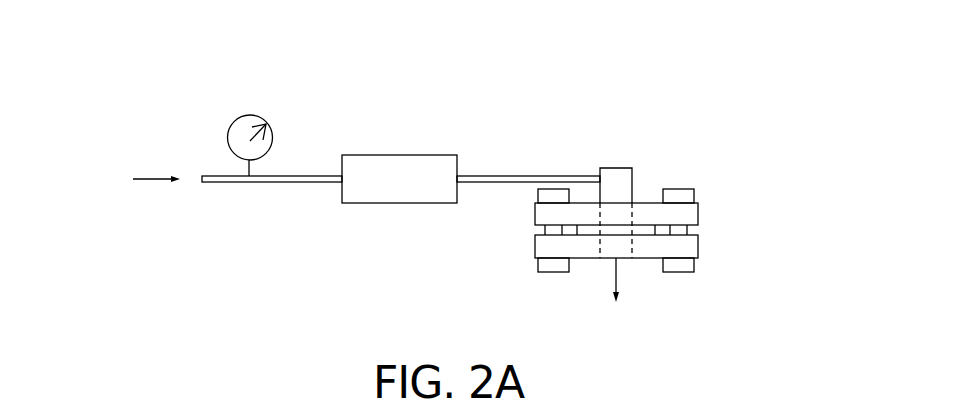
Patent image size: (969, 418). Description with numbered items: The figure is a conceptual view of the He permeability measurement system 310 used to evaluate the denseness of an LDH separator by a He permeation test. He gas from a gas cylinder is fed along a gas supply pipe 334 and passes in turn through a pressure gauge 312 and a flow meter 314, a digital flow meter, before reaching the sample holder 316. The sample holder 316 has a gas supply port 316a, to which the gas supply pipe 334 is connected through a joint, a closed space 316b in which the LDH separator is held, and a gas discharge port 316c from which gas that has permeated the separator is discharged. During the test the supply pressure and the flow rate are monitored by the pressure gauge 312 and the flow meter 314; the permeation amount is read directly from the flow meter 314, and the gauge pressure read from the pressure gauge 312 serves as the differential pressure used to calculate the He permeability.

The He permeability measurement system 310 is at (461, 178).
The pressure gauge 312 is at (238, 117).
The flow meter 314 is at (406, 173).
The sample holder 316 is at (662, 200).
The gas supply port 316a is at (632, 215).
The closed space 316b is at (623, 232).
The gas discharge port 316c is at (632, 243).
The gas supply pipe 334 is at (500, 175).